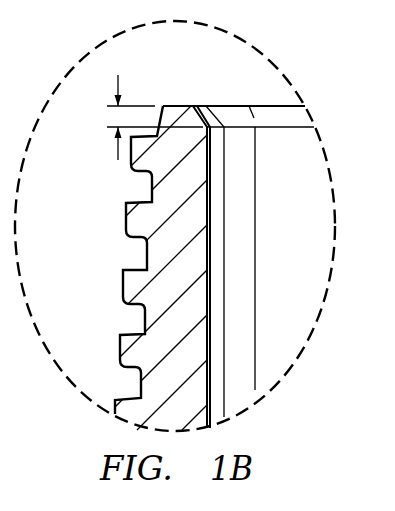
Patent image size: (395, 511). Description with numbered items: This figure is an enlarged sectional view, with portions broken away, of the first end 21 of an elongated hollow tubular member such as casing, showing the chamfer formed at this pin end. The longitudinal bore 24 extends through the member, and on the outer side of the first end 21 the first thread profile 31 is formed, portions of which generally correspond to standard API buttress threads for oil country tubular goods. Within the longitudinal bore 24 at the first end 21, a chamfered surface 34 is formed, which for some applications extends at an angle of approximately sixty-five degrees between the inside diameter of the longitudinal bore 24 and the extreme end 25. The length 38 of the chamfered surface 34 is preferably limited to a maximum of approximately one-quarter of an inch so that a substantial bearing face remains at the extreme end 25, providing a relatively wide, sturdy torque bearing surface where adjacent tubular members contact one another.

The first end 21 is at (143, 98).
The extreme end 25 is at (197, 242).
The chamfered surface 34 is at (204, 105).
The length 38 is at (110, 116).
The first thread profile 31 is at (125, 218).
The longitudinal bore 24 is at (307, 241).